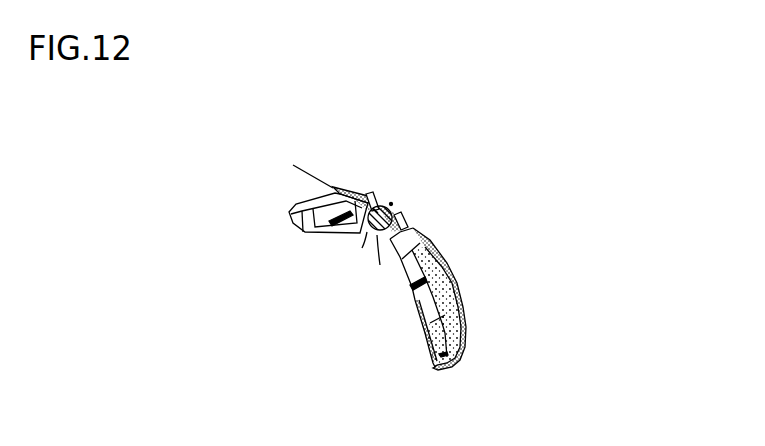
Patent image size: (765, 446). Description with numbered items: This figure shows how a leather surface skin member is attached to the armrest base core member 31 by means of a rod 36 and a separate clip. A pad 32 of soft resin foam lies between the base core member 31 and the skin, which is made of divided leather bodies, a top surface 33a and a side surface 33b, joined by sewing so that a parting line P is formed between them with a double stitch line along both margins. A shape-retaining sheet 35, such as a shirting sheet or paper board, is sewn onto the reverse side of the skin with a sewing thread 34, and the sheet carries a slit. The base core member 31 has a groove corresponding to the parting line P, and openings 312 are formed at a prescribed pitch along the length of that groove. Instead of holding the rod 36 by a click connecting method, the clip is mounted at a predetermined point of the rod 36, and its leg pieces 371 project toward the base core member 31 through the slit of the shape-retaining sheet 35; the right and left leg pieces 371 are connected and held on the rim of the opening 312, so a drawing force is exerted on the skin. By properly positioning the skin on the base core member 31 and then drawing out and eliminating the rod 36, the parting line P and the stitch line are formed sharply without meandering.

The base core member 31 is at (437, 343).
The pad 32 is at (445, 278).
The top surface 33a is at (340, 188).
The side surface 33b is at (465, 307).
The sewing thread 34 is at (372, 195).
The shape-retaining sheet 35 is at (368, 233).
The rod 36 is at (383, 204).
The leg pieces 371 is at (356, 232).
The opening 312 is at (360, 232).
The parting line P is at (391, 204).